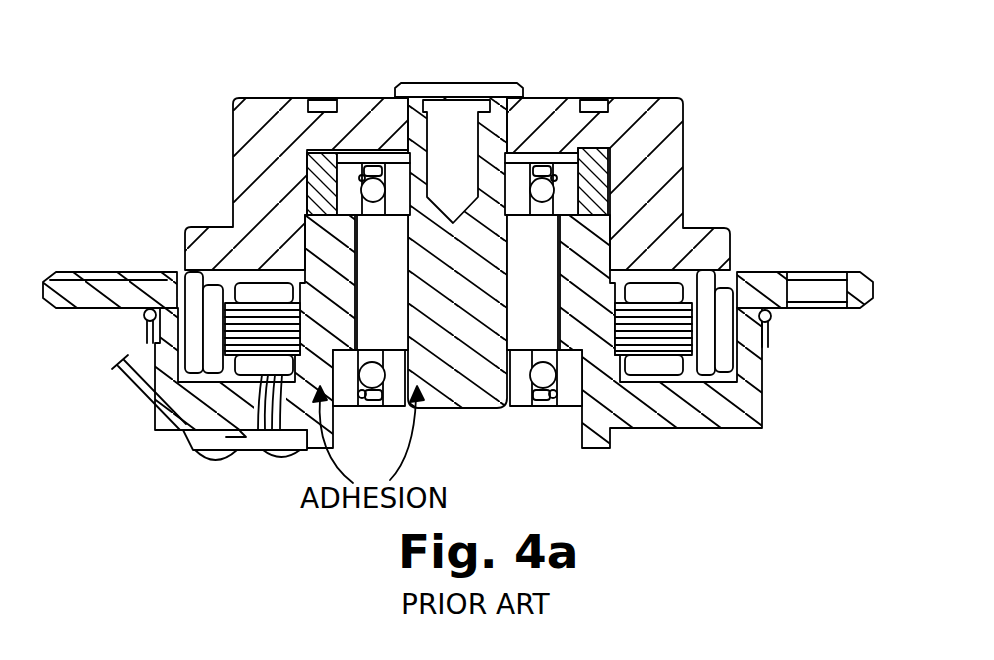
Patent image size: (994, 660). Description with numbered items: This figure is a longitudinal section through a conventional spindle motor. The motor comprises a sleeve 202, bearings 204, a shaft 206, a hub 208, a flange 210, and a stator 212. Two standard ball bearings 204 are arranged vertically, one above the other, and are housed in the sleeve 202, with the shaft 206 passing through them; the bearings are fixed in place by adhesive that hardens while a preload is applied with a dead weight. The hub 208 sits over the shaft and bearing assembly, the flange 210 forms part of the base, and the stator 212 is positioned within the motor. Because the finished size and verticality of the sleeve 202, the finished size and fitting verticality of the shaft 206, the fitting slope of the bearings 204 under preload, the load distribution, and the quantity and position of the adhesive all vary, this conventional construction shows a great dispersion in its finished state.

The sleeve 202 is at (315, 162).
The bearings 204 is at (372, 185).
The shaft 206 is at (495, 107).
The hub 208 is at (633, 107).
The flange 210 is at (774, 281).
The stator 212 is at (650, 365).